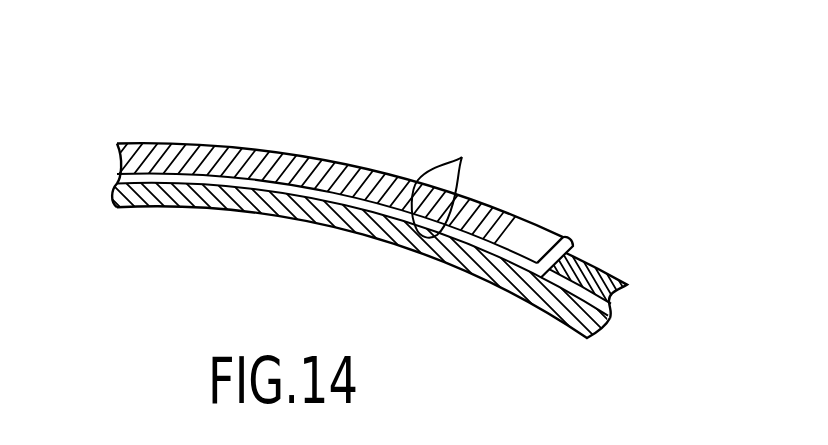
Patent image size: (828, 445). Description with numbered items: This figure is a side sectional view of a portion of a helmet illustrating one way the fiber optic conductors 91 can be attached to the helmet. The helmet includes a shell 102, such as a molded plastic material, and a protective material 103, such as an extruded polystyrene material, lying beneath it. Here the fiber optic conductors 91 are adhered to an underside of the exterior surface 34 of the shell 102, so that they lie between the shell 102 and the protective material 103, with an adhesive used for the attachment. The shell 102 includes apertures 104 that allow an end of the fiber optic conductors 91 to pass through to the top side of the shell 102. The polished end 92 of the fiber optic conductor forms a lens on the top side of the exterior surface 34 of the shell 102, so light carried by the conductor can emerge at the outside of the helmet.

The shell 102 is at (201, 158).
The protective material 103 is at (203, 202).
The fiber optic conductors 91 is at (280, 185).
The polished end 92 is at (569, 240).
The apertures 104 is at (597, 259).
The exterior surface 34 is at (462, 157).